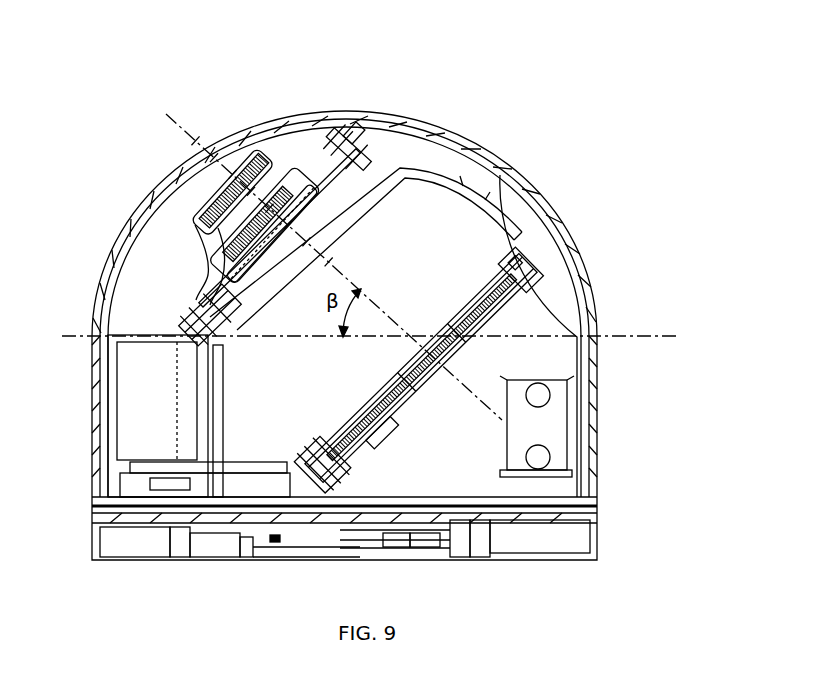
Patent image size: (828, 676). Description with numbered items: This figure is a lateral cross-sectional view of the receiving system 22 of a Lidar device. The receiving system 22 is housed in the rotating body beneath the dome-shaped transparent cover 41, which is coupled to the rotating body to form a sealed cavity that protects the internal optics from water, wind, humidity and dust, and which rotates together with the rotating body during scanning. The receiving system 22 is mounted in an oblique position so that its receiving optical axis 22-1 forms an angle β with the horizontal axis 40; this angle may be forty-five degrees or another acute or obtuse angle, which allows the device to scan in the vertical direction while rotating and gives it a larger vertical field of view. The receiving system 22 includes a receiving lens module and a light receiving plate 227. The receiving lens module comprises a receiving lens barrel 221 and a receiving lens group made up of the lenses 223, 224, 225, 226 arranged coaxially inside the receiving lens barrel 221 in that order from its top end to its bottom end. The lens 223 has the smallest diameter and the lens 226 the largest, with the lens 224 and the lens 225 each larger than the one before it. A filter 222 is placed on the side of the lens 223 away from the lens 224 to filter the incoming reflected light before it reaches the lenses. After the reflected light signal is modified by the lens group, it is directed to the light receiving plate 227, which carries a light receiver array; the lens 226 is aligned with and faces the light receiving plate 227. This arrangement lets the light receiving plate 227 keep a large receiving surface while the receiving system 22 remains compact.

The receiving system 22 is at (193, 200).
The receiving optical axis 22-1 is at (175, 119).
The receiving lens barrel 221 is at (200, 267).
The filter 222 is at (247, 165).
The lens 223 is at (277, 150).
The lens 224 is at (298, 168).
The lens 225 is at (330, 190).
The lens 226 is at (347, 213).
The light receiving plate 227 is at (500, 305).
The horizontal axis 40 is at (617, 334).
The transparent cover 41 is at (567, 247).